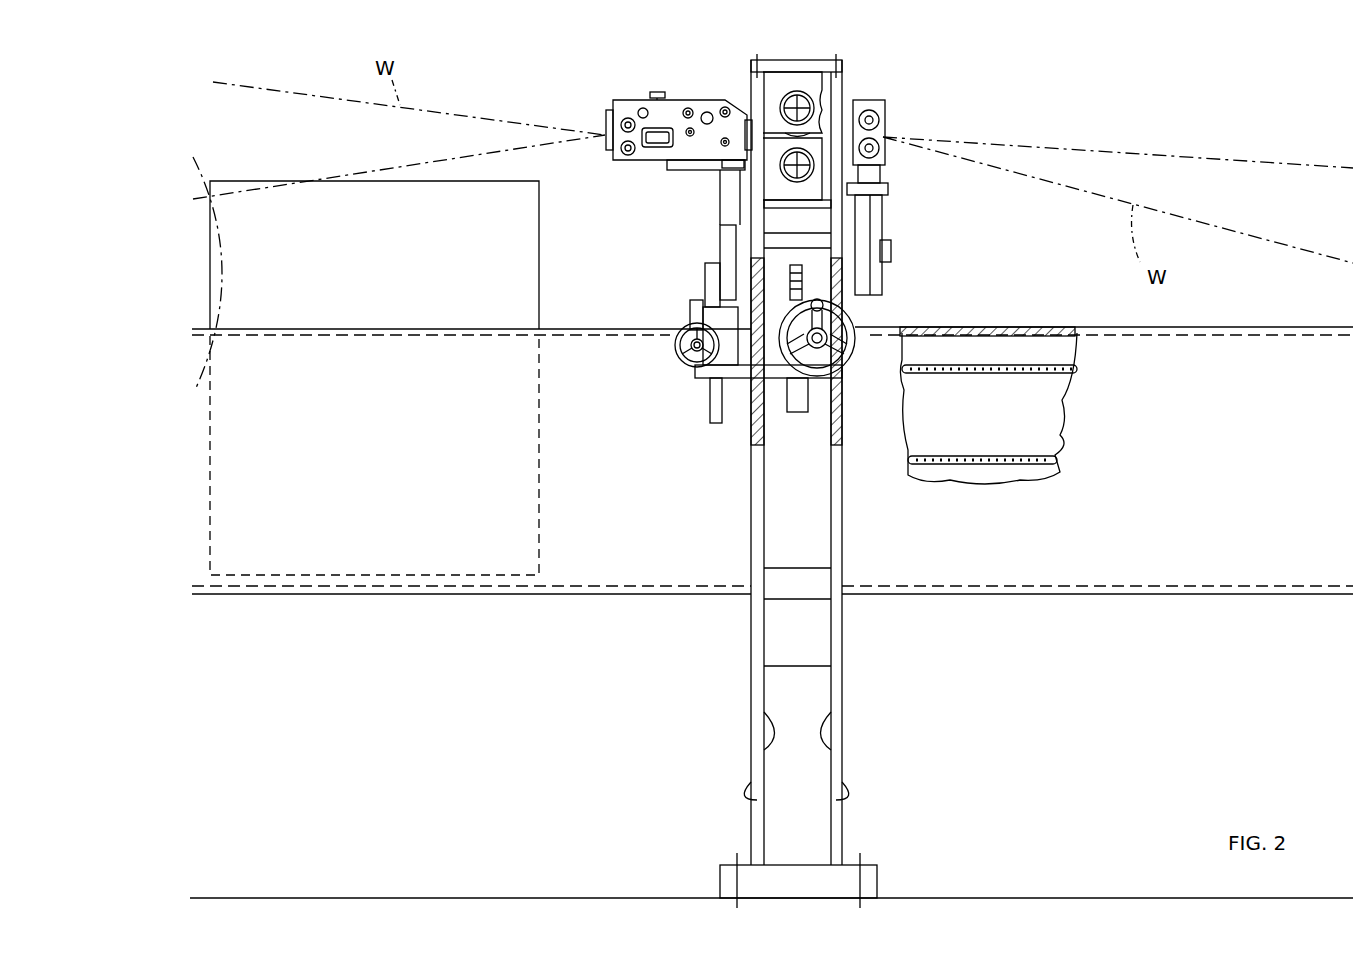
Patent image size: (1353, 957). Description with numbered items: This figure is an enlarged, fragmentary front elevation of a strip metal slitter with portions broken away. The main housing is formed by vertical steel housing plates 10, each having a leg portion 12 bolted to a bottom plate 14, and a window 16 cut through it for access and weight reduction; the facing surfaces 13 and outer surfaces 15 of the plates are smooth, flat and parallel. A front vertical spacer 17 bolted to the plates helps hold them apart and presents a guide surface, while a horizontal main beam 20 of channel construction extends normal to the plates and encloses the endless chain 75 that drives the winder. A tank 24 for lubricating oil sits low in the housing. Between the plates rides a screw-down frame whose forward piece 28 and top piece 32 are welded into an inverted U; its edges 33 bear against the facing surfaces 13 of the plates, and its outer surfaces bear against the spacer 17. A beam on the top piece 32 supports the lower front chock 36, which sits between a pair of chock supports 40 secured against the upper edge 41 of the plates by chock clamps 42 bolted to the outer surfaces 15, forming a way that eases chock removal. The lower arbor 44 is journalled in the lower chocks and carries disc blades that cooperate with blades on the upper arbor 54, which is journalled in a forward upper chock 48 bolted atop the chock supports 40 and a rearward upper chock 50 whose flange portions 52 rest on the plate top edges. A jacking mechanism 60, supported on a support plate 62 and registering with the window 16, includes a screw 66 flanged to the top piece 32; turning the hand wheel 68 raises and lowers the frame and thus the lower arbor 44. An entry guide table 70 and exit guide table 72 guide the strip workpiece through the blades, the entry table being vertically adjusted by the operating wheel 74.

The housing plates 10 is at (770, 437).
The leg portion 12 is at (752, 810).
The facing surfaces 13 is at (770, 740).
The bottom plate 14 is at (880, 874).
The outer surfaces 15 is at (838, 782).
The window 16 is at (790, 290).
The front vertical spacer 17 is at (828, 518).
The horizontal main beam 20 is at (575, 560).
The tank 24 is at (772, 633).
The forward piece 28 is at (843, 425).
The top piece 32 is at (891, 251).
The edges 33 is at (764, 428).
The lower front chock 36 is at (883, 141).
The chock supports 40 is at (780, 215).
The upper edge 41 is at (880, 200).
The chock clamps 42 is at (735, 235).
The lower arbor 44 is at (880, 176).
The forward upper chock 48 is at (780, 75).
The rearward upper chock 50 is at (822, 85).
The flange portions 52 is at (752, 62).
The upper arbor 54 is at (822, 118).
The jacking mechanism 60 is at (758, 318).
The support plate 62 is at (700, 380).
The screw 66 is at (880, 327).
The hand wheel 68 is at (848, 356).
The entry guide table 70 is at (638, 95).
The exit guide table 72 is at (893, 104).
The operating wheel 74 is at (680, 358).
The endless chain 75 is at (1025, 466).